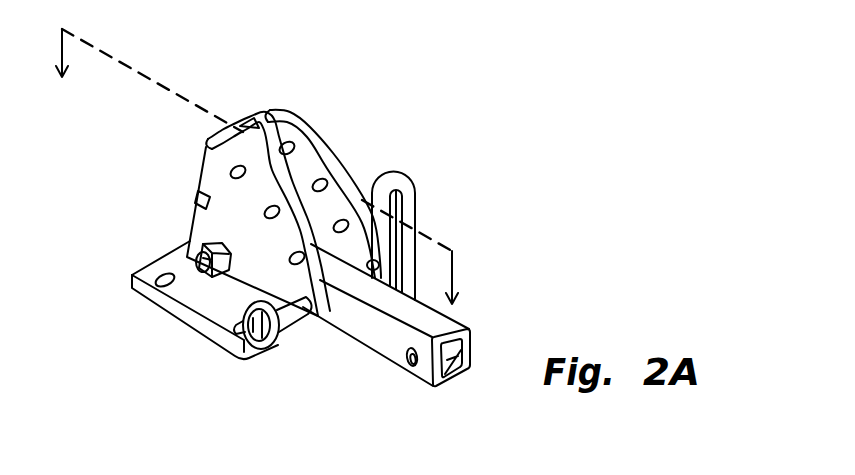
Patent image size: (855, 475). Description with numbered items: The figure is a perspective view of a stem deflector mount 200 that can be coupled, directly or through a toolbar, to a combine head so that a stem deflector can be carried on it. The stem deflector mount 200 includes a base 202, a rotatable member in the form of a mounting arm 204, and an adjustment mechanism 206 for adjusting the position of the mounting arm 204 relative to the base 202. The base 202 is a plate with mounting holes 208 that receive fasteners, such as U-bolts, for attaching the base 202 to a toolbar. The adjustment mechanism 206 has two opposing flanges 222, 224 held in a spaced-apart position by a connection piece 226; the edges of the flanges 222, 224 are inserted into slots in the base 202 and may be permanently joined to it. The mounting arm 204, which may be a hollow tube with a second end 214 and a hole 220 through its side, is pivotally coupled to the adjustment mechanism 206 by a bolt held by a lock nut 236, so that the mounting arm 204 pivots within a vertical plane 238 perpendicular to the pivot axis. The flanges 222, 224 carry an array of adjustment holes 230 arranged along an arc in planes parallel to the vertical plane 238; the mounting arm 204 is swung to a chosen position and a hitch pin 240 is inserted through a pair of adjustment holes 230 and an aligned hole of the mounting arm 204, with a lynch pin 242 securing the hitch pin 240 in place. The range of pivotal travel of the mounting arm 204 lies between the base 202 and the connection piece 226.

The stem deflector mount 200 is at (478, 108).
The base 202 is at (175, 310).
The rotatable member (mounting arm) 204 is at (376, 335).
The adjustment mechanism 206 is at (163, 180).
The mounting holes 208 is at (153, 273).
The second end 214 is at (445, 330).
The hole 220 is at (446, 351).
The flange 222 is at (233, 230).
The flange 224 is at (338, 148).
The connection piece 226 is at (254, 121).
The adjustment holes 230 is at (272, 208).
The lock nut 236 is at (212, 278).
The plane (vertical plane) 238 is at (132, 68).
The hitch pin 240 is at (418, 200).
The lynch pin 242 is at (279, 345).